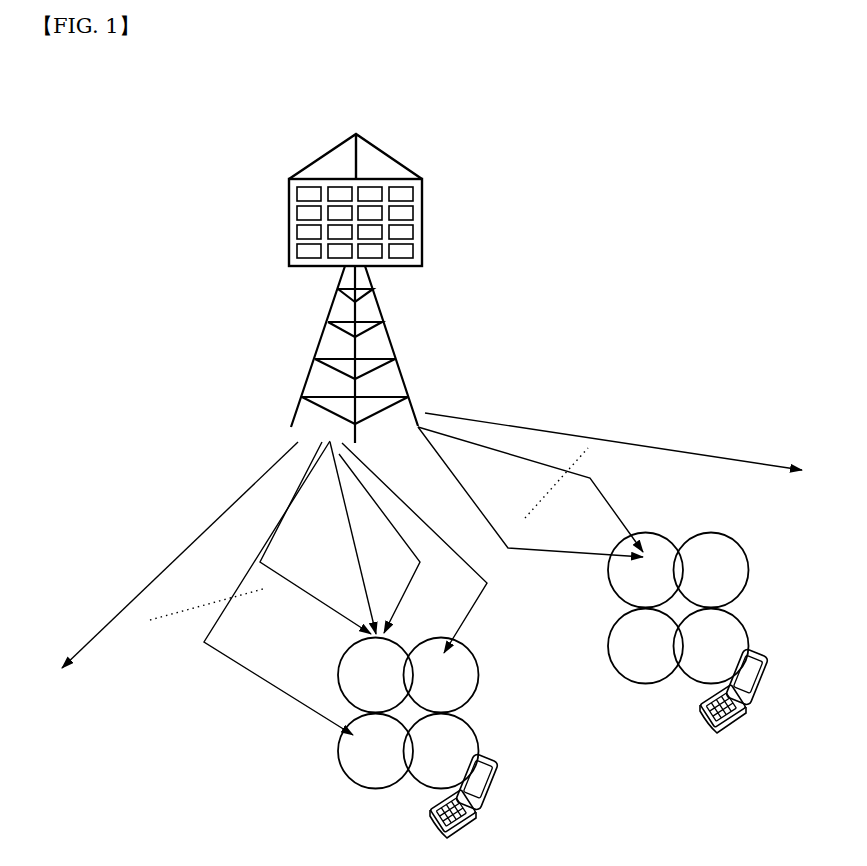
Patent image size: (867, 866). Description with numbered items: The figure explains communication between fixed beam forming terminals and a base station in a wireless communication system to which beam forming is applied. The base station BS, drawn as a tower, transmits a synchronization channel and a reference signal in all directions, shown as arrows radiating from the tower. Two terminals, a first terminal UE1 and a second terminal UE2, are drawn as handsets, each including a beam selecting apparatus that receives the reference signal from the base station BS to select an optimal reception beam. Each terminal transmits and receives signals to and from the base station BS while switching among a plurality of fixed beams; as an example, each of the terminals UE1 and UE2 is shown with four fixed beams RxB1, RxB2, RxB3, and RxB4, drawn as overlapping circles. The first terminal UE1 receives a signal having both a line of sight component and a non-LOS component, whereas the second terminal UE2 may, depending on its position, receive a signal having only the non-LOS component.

The base station BS is at (422, 177).
The first terminal UE1 is at (466, 799).
The second terminal UE2 is at (736, 693).
The first fixed beam RxB1 is at (510, 623).
The second fixed beam RxB2 is at (576, 623).
The third fixed beam RxB3 is at (510, 699).
The fourth fixed beam RxB4 is at (576, 699).